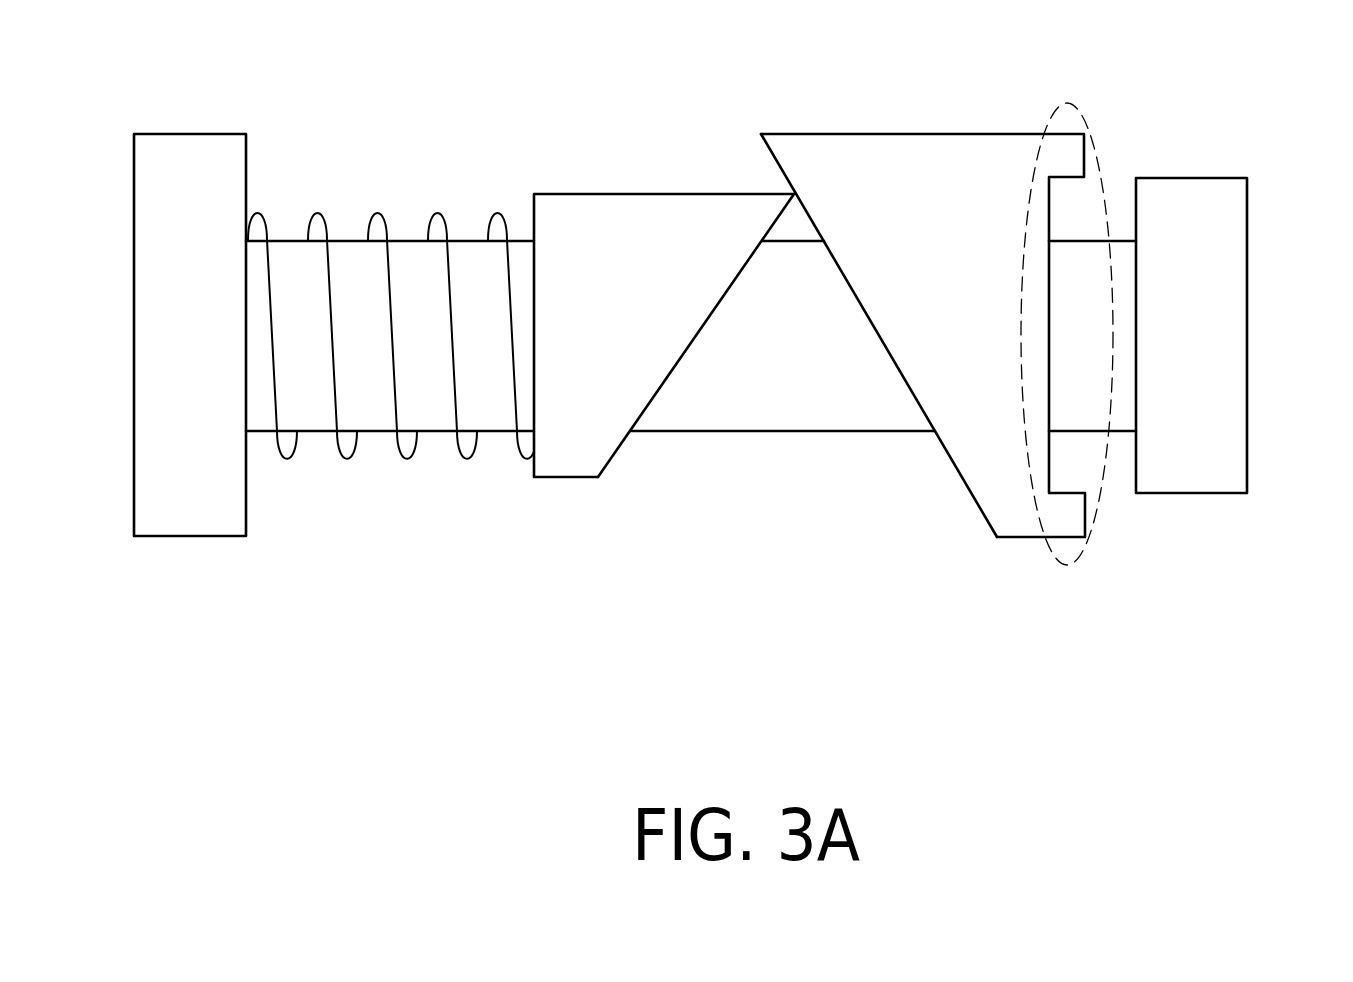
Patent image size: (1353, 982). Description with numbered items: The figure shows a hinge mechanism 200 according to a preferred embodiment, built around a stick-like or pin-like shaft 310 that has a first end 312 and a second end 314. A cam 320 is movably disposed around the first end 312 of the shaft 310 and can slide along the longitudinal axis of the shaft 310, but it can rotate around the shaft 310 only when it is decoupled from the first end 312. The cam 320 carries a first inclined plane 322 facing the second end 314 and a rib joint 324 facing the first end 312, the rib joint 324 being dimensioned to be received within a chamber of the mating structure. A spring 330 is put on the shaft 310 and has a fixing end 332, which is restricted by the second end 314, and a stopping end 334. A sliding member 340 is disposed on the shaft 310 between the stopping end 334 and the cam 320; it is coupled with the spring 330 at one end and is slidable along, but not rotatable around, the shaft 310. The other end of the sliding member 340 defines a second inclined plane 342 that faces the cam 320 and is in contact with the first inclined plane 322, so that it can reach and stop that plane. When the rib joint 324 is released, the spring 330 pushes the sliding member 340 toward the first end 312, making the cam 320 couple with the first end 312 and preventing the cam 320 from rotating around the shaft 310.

The hinge mechanism 200 is at (713, 677).
The shaft 310 is at (744, 403).
The first end 312 is at (1227, 210).
The second end 314 is at (148, 223).
The cam 320 is at (937, 329).
The first inclined plane 322 is at (898, 376).
The rib joint 324 is at (1052, 122).
The spring 330 is at (392, 353).
The fixing end 332 is at (250, 238).
The stopping end 334 is at (533, 434).
The sliding member 340 is at (664, 391).
The second inclined plane 342 is at (681, 362).